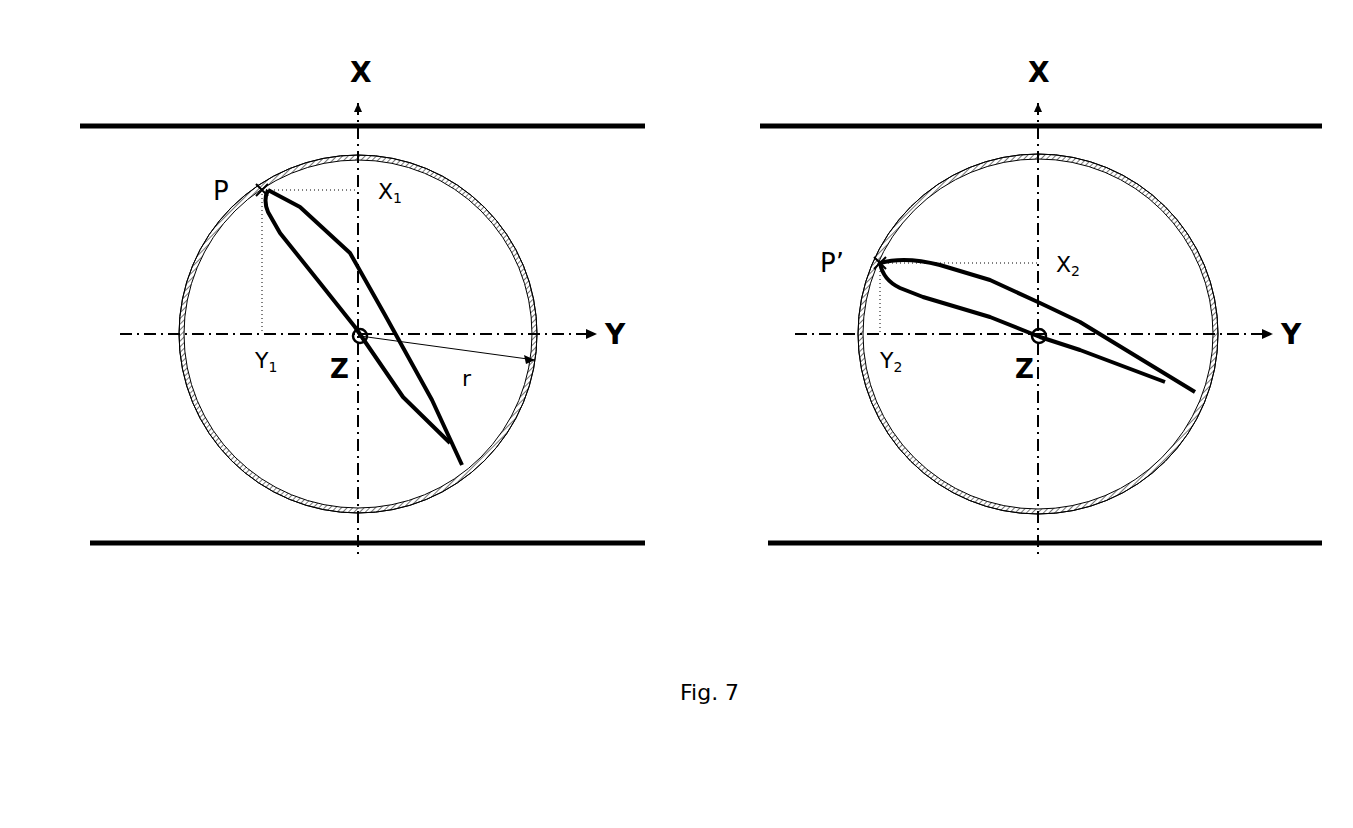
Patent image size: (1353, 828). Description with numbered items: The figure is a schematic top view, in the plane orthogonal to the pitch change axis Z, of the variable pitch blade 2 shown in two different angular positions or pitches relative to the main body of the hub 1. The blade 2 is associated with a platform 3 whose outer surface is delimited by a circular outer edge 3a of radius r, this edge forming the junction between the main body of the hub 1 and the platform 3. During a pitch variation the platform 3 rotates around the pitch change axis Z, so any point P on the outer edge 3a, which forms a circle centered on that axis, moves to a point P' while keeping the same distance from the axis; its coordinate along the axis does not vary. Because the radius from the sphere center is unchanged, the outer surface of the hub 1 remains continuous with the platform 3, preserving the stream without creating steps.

The hub 1 is at (507, 153).
The blade 2 is at (450, 443).
The platform 3 is at (475, 258).
The circular outer edge 3a is at (203, 410).